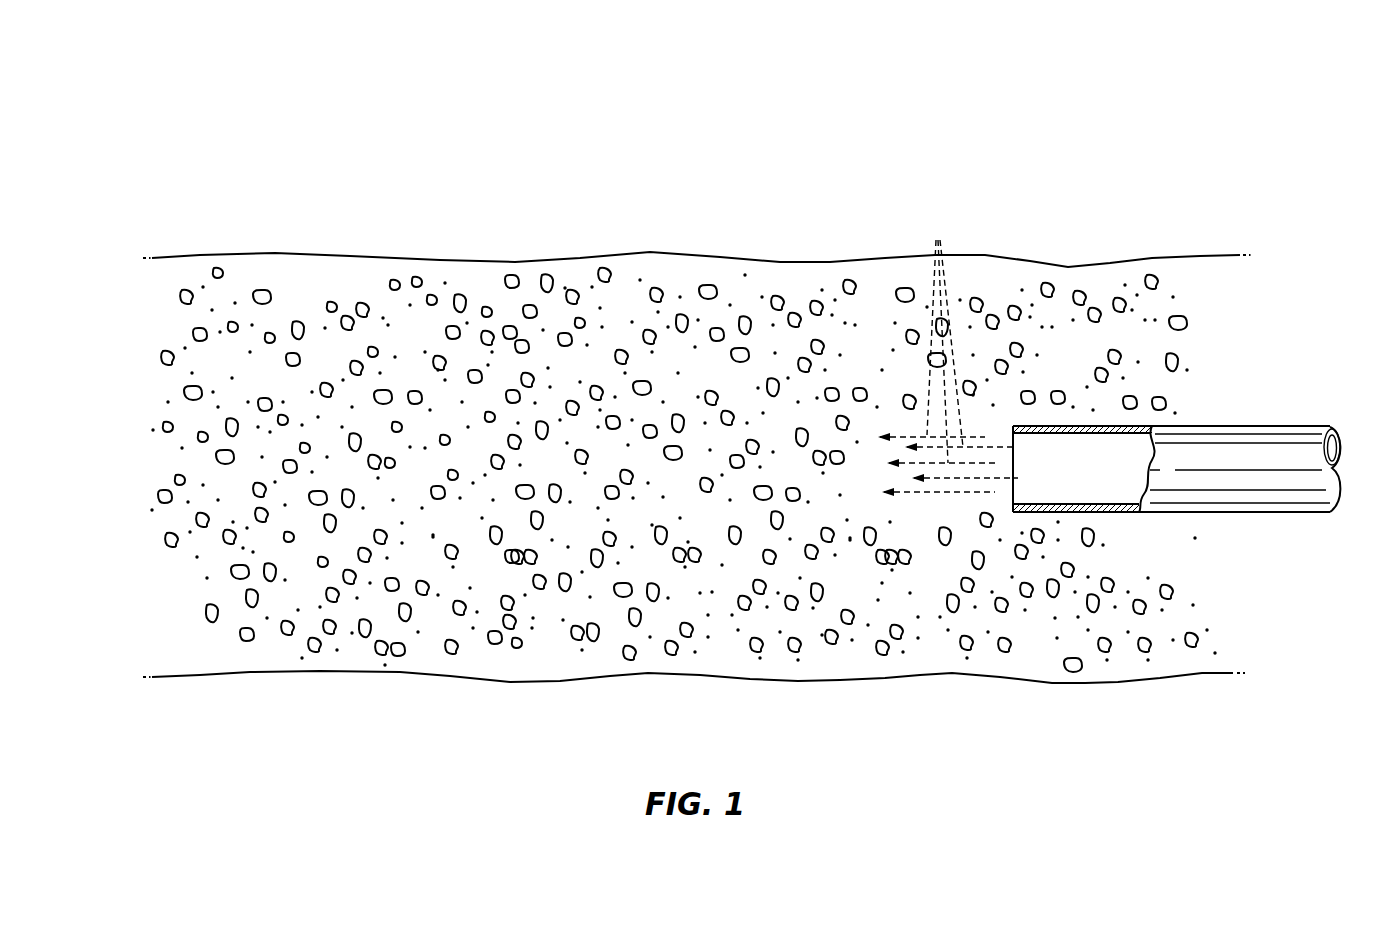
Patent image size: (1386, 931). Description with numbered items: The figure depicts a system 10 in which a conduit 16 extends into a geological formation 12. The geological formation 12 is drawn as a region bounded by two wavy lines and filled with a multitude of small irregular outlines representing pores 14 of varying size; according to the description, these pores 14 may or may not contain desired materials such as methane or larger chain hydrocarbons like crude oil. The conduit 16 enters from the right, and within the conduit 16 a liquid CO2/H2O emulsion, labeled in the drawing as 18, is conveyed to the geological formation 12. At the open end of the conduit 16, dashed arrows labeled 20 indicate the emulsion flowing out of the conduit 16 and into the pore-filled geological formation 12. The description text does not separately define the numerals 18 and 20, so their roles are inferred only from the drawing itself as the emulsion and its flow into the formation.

The system 10 is at (1284, 140).
The geological formation 12 is at (655, 252).
The pores 14 is at (271, 333).
The conduit 16 is at (1233, 426).
The CO2:H2O mixture 18 is at (1098, 488).
The injected fluid flow arrows 20 is at (948, 350).